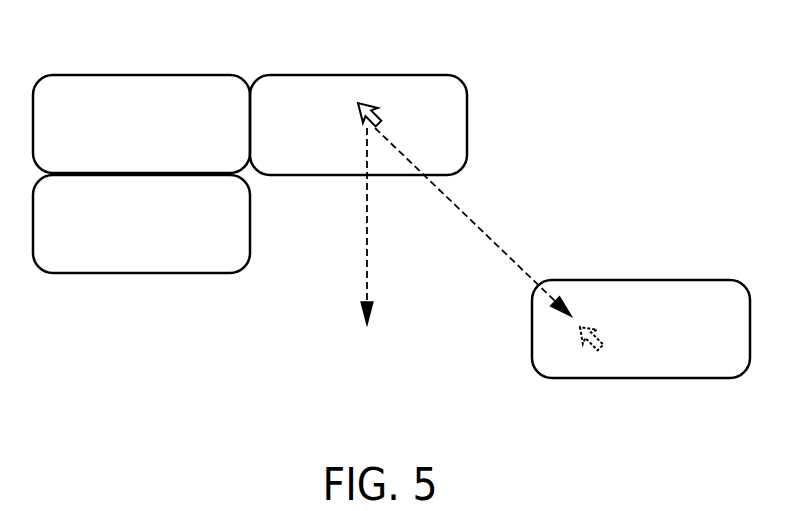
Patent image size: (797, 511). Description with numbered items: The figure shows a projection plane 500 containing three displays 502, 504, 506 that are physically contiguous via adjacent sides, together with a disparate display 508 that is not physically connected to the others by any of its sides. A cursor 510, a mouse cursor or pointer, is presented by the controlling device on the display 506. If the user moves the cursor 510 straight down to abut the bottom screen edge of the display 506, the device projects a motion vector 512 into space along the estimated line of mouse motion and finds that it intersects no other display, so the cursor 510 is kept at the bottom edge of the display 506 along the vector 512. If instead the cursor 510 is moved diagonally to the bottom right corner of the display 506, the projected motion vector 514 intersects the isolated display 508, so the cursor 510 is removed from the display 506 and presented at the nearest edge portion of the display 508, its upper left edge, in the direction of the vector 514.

The projection plane 500 is at (552, 44).
The display 502 is at (117, 136).
The display 504 is at (117, 234).
The display 506 is at (284, 136).
The disparate display 508 is at (680, 348).
The cursor 510 is at (373, 106).
The motion vector 512 is at (368, 240).
The motion vector 514 is at (483, 229).